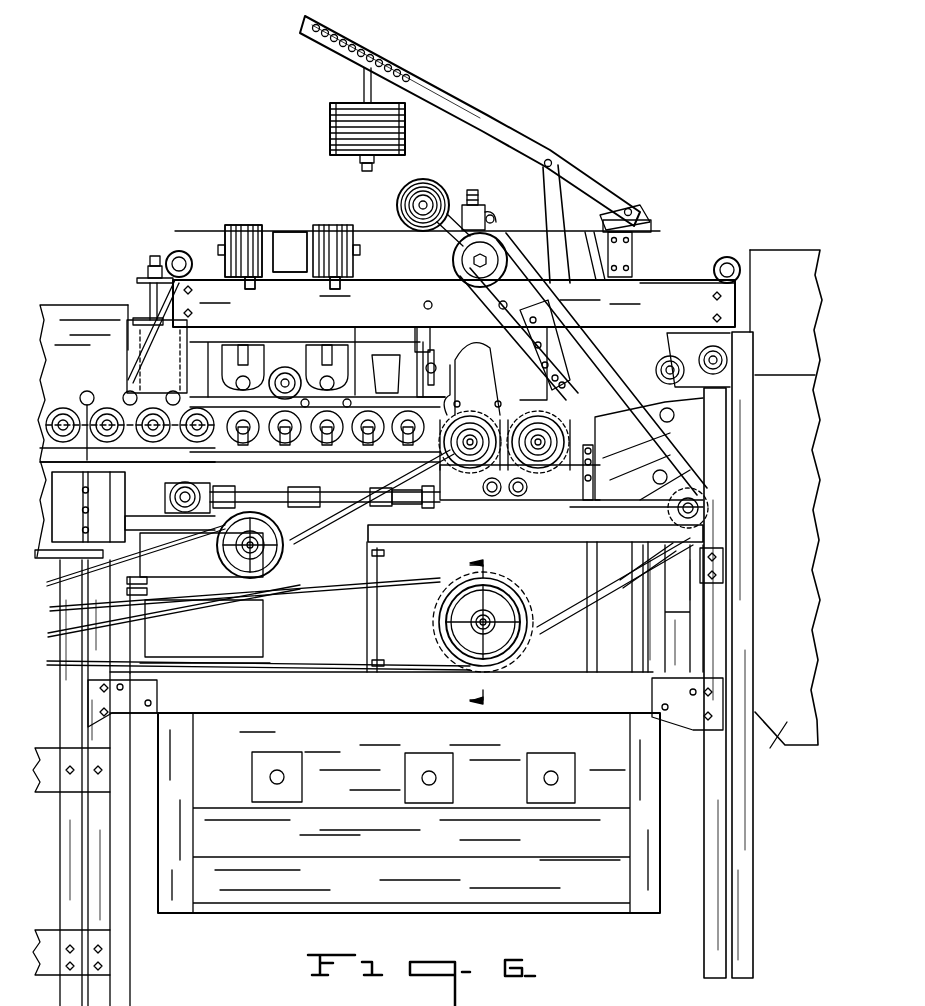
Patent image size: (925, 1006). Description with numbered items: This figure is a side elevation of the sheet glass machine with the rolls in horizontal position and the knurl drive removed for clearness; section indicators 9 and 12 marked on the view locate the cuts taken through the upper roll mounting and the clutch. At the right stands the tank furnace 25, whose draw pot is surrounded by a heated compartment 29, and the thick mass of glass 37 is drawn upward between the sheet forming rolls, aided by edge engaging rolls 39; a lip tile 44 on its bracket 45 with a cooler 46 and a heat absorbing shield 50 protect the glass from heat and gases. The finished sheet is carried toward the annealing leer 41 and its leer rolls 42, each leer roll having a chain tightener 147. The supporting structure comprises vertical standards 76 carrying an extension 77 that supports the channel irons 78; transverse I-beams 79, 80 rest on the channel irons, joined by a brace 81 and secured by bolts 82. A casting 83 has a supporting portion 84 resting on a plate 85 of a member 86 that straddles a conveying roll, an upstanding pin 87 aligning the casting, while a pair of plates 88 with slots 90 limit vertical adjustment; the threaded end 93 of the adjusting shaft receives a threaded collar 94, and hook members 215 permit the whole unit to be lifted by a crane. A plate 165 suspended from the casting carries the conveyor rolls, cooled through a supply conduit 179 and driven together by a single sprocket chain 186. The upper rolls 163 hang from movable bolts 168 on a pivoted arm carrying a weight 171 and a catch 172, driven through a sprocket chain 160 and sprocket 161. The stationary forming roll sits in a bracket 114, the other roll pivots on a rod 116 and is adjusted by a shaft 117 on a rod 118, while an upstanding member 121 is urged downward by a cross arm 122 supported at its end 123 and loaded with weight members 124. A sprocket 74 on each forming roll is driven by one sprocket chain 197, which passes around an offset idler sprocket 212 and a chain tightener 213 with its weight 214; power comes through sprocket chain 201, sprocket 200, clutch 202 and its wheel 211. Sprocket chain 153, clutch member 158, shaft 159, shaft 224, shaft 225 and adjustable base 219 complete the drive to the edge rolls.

The cross arm 122 is at (505, 150).
The weight members 124 is at (345, 118).
The end of cross arm 123 is at (612, 205).
The weight 214 is at (436, 192).
The threaded end 93 is at (480, 192).
The threaded collar 94 is at (494, 213).
The chain tightener 213 is at (492, 246).
The shaft 117 is at (575, 380).
The upstanding member 121 is at (560, 352).
The rod 118 is at (570, 388).
The rod 116 is at (505, 395).
The brace 81 is at (578, 240).
The transverse I-beam 80 is at (280, 232).
The weight 171 is at (227, 230).
The bolts 82 is at (283, 232).
The catch 172 is at (255, 290).
The transverse I-beam 79 is at (638, 236).
The hook members 215 is at (180, 250).
The casting 83 is at (388, 252).
The channel iron 78 is at (672, 283).
The extension 77 is at (690, 345).
The annealing leer 41 is at (88, 312).
The supporting portion 84 is at (145, 325).
The upstanding pin 87 is at (176, 378).
The plate 85 is at (105, 395).
The leer rolls 42 is at (65, 408).
The sprocket 161 is at (288, 365).
The movable bolts 168 is at (242, 340).
The upper rolls 163 is at (358, 340).
The plates 88 is at (428, 337).
The slots 90 is at (437, 378).
The section line 9 is at (312, 330).
The bracket 114 is at (444, 412).
The sprocket 74 is at (512, 408).
The heat absorbing shield 50 is at (481, 487).
The edge engaging rolls 39 is at (528, 487).
The mass of glass 37 is at (500, 498).
The cooler 46 is at (580, 505).
The lip tile 44 is at (625, 432).
The bracket 45 is at (657, 375).
The chain tightener 147 is at (96, 472).
The member 86 is at (125, 462).
The plate 165 is at (225, 478).
The shaft 225 is at (170, 498).
The clutch member 158 is at (276, 566).
The shaft 159 is at (268, 544).
The sprocket chain 153 is at (168, 538).
The sprocket chain 160 is at (275, 505).
The supply conduit 179 is at (325, 490).
The sprocket chain 186 is at (372, 505).
The shaft 224 is at (414, 506).
The sprocket chain 201 is at (402, 660).
The adjustable base 219 is at (520, 533).
The sprocket 200 is at (440, 668).
The clutch 202 is at (527, 643).
The wheel 211 is at (452, 612).
The sprocket chain 197 is at (574, 603).
The section line 12 is at (483, 567).
The compartment 29 is at (200, 752).
The tank furnace 25 is at (763, 745).
The vertical standards 76 is at (738, 796).
The idler sprocket 212 is at (700, 508).